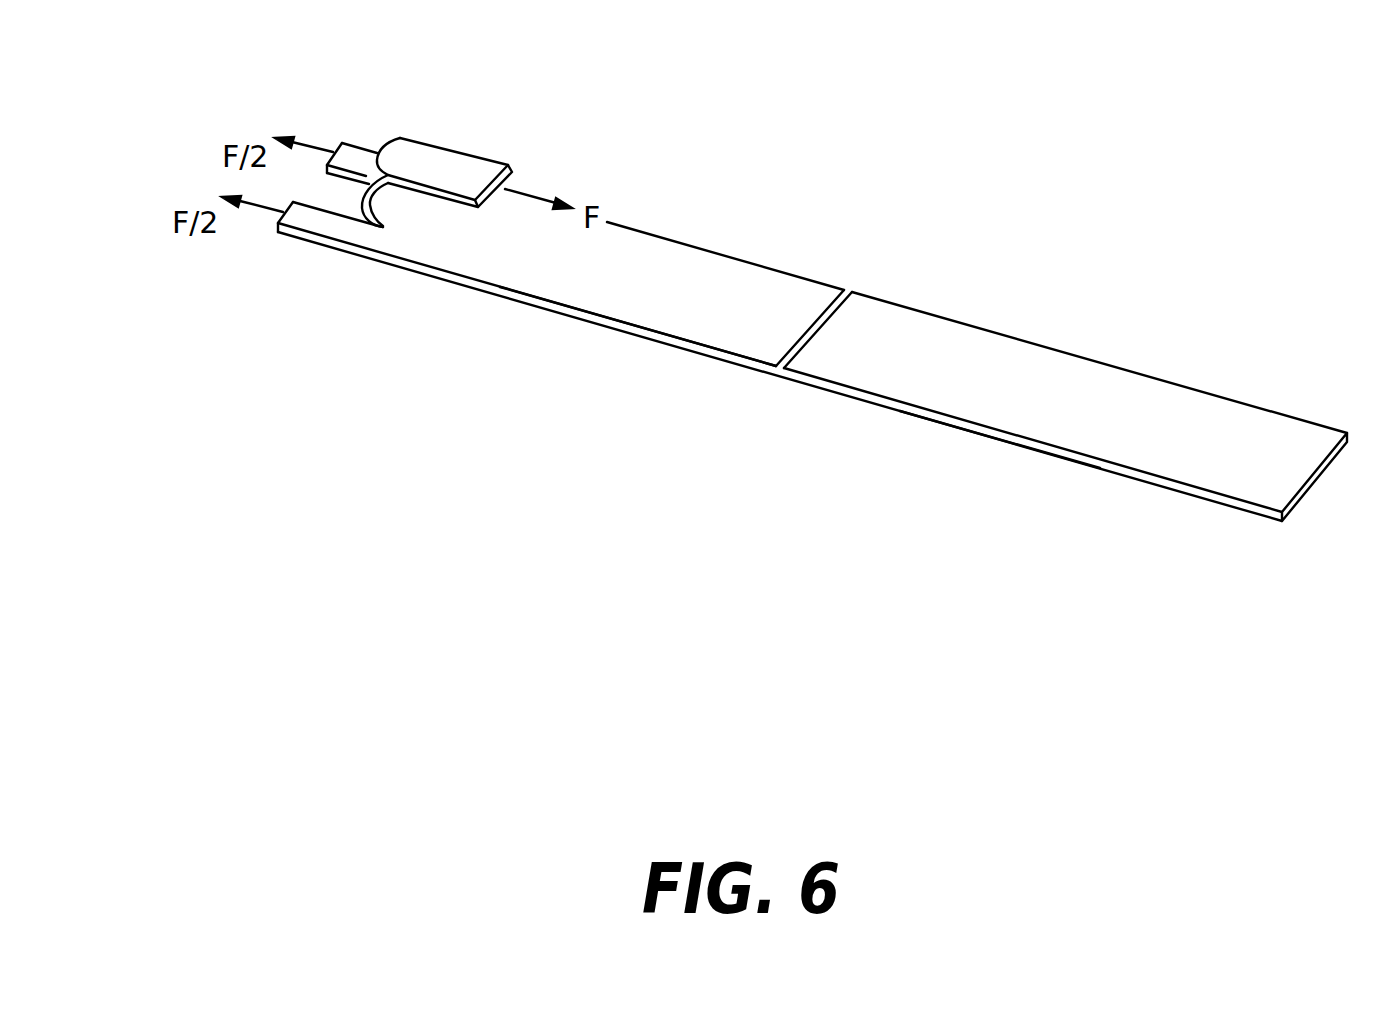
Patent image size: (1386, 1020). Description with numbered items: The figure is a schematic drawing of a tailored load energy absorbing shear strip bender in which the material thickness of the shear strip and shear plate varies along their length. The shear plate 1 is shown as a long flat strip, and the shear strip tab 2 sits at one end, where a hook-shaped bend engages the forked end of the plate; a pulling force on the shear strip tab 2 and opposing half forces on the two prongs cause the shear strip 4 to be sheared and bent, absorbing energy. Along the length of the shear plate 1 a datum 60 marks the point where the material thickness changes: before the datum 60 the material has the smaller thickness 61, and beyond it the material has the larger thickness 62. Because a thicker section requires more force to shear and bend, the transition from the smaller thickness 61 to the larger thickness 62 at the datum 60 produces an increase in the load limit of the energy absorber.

The shear plate 1 is at (1263, 443).
The shear strip tab 2 is at (475, 167).
The shear strip 4 is at (392, 218).
The datum 60 is at (840, 287).
The smaller thickness 61 is at (643, 332).
The larger thickness 62 is at (1002, 437).